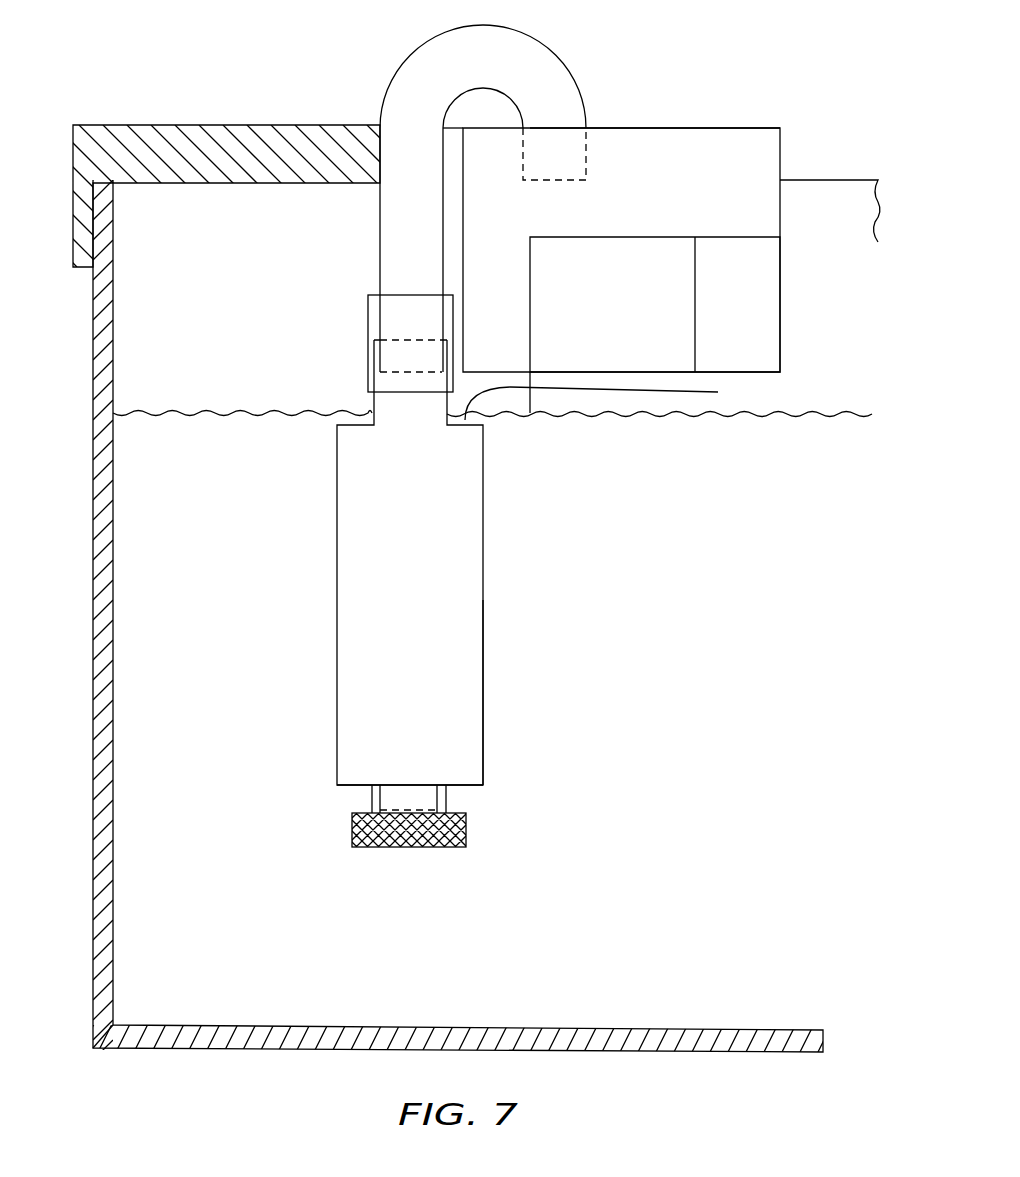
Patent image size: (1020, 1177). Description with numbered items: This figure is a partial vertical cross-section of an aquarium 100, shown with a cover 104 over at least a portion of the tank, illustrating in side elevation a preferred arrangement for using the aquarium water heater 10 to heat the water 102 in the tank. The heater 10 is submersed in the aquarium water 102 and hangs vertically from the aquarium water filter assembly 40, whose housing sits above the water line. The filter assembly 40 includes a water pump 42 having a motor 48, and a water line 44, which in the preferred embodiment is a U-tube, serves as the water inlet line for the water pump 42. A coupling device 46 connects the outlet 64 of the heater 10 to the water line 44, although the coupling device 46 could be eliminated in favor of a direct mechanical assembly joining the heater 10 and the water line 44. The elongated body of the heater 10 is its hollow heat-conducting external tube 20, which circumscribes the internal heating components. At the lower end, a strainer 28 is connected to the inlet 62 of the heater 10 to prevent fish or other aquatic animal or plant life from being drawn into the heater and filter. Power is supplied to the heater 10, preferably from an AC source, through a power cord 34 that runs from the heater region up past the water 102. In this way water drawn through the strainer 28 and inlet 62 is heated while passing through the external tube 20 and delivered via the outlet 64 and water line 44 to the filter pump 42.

The aquarium water heater 10 is at (473, 515).
The external tube 20 is at (473, 745).
The strainer 28 is at (352, 828).
The power cord 34 is at (606, 420).
The aquarium water filter assembly 40 is at (737, 155).
The water pump 42 is at (683, 140).
The water line 44 is at (540, 63).
The coupling device 46 is at (388, 315).
The motor 48 is at (617, 320).
The inlet 62 is at (428, 800).
The outlet 64 is at (410, 380).
The aquarium 100 is at (125, 355).
The water 102 is at (835, 430).
The cover 104 is at (212, 123).